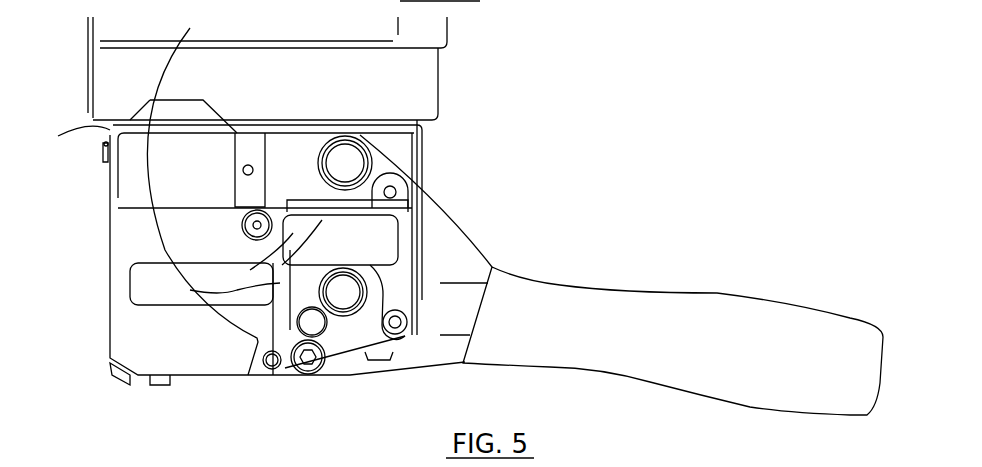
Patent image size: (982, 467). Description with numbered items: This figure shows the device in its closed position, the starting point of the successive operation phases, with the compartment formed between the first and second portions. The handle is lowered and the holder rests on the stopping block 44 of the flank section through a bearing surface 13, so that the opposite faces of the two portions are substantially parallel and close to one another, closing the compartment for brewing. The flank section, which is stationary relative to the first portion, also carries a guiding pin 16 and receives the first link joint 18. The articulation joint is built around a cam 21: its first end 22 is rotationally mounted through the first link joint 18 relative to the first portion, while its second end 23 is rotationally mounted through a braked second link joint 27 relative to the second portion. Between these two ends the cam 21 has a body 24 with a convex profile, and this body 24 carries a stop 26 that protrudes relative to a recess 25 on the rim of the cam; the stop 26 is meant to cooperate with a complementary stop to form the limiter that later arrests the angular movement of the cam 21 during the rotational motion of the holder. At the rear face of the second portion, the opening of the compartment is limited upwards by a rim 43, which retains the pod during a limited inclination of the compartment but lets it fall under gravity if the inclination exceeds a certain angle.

The bearing surface 13 is at (67, 141).
The guiding pin 16 is at (257, 225).
The first link joint 18 is at (397, 334).
The cam 21 is at (357, 242).
The first end 22 is at (420, 288).
The second end 23 is at (326, 335).
The body 24 is at (383, 295).
The recess 25 is at (290, 258).
The stop 26 is at (300, 262).
The second link joint 27 is at (290, 366).
The rim 43 is at (190, 290).
The stopping block 44 is at (202, 187).